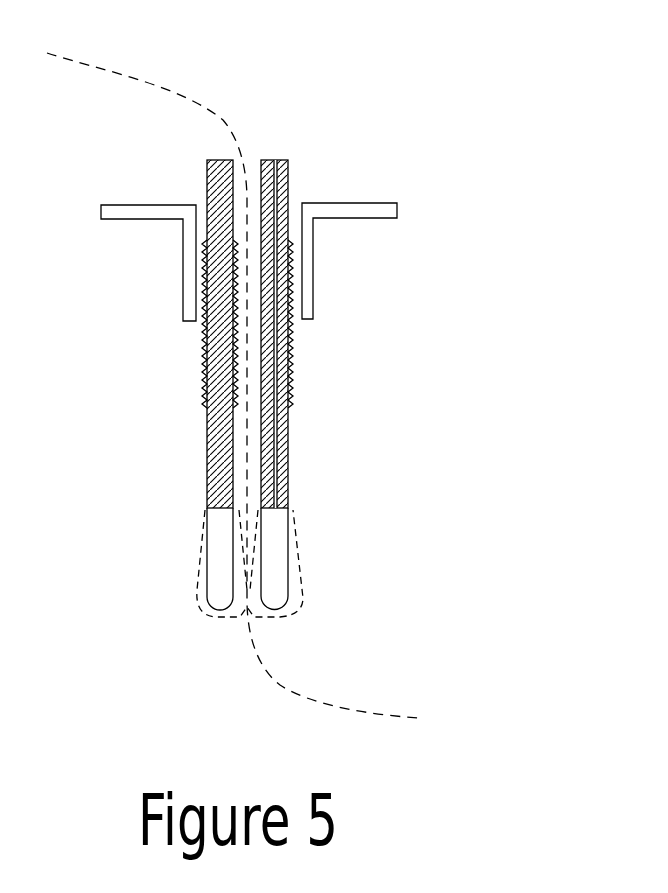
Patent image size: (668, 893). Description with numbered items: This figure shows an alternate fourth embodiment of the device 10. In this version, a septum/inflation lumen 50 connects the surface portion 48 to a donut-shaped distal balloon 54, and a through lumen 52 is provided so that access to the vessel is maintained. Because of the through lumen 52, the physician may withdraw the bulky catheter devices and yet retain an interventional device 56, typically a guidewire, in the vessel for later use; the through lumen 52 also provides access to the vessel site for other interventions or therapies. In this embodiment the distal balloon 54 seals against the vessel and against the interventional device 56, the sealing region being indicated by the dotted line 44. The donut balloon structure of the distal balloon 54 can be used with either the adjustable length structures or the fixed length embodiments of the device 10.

The device 10 is at (470, 268).
The dotted line 44 is at (197, 582).
The surface portion 48 is at (281, 274).
The septum/inflation lumen 50 is at (280, 428).
The through lumen 52 is at (237, 205).
The distal balloon 54 is at (280, 570).
The interventional device 56 is at (280, 685).